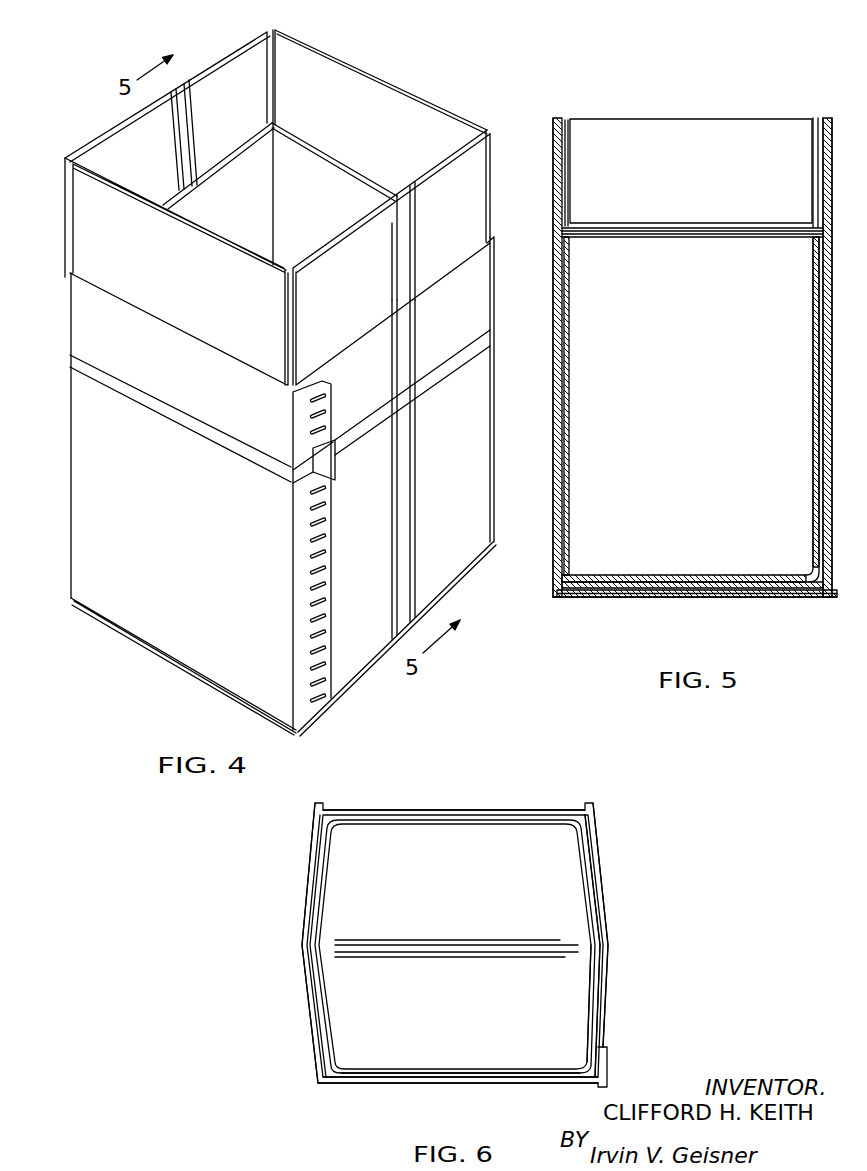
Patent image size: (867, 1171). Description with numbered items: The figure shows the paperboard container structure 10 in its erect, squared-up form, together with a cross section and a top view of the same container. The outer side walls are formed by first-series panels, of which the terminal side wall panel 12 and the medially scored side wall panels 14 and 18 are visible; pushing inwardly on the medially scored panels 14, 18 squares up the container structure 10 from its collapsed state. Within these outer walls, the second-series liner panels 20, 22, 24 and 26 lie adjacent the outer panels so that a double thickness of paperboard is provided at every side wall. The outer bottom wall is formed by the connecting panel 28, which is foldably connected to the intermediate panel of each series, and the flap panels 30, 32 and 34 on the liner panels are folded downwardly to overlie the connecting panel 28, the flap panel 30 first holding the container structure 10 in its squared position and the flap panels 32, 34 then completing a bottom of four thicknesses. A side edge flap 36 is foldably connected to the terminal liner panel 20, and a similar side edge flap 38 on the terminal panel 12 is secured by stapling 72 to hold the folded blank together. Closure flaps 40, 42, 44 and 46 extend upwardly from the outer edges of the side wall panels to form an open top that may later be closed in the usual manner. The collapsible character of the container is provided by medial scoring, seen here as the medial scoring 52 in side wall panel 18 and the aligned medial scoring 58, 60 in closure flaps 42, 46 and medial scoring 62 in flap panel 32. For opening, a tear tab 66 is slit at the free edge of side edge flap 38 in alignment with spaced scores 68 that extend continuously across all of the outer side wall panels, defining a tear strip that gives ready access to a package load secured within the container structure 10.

In FIG. 4, the container structure 10 is at (170, 666).
In FIG. 5, the container structure 10 is at (555, 597).
In FIG. 6, the container structure 10 is at (317, 1090).
In FIG. 4, the side wall panel 12 is at (196, 580).
In FIG. 5, the side wall panel 14 is at (553, 300).
In FIG. 4, the side wall panel 18 is at (382, 566).
In FIG. 5, the side wall panel 18 is at (836, 340).
In FIG. 5, the liner panel 20 is at (689, 435).
In FIG. 6, the liner panel 20 is at (422, 823).
In FIG. 5, the liner panel 22 is at (568, 315).
In FIG. 6, the liner panel 22 is at (318, 882).
In FIG. 6, the liner panel 24 is at (595, 1003).
In FIG. 5, the liner panel 26 is at (815, 382).
In FIG. 6, the liner panel 26 is at (383, 1072).
In FIG. 5, the connecting panel 28 is at (738, 593).
In FIG. 5, the flap panel 30 is at (667, 590).
In FIG. 5, the flap panel 32 is at (688, 582).
In FIG. 6, the flap panel 32 is at (472, 906).
In FIG. 5, the flap panel 34 is at (635, 577).
In FIG. 6, the side edge flap 36 is at (592, 878).
In FIG. 4, the side edge flap 38 is at (333, 595).
In FIG. 6, the side edge flap 38 is at (605, 1072).
In FIG. 4, the closure flap 40 is at (191, 298).
In FIG. 6, the closure flap 40 is at (408, 1083).
In FIG. 4, the closure flap 42 is at (244, 140).
In FIG. 5, the closure flap 42 is at (553, 168).
In FIG. 6, the closure flap 42 is at (315, 865).
In FIG. 4, the closure flap 44 is at (382, 140).
In FIG. 5, the closure flap 44 is at (702, 170).
In FIG. 6, the closure flap 44 is at (440, 818).
In FIG. 4, the closure flap 46 is at (359, 310).
In FIG. 5, the closure flap 46 is at (825, 115).
In FIG. 6, the closure flap 46 is at (603, 1000).
In FIG. 4, the medial scoring 52 is at (405, 475).
In FIG. 4, the medial scoring 58 is at (181, 102).
In FIG. 4, the medial scoring 60 is at (403, 232).
In FIG. 6, the medial scoring 62 is at (403, 952).
In FIG. 4, the tear tab 66 is at (327, 470).
In FIG. 4, the spaced scores 68 is at (165, 408).
In FIG. 4, the stapling 72 is at (320, 653).